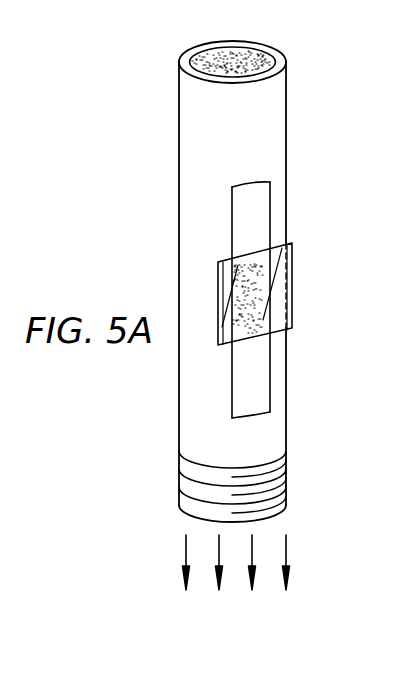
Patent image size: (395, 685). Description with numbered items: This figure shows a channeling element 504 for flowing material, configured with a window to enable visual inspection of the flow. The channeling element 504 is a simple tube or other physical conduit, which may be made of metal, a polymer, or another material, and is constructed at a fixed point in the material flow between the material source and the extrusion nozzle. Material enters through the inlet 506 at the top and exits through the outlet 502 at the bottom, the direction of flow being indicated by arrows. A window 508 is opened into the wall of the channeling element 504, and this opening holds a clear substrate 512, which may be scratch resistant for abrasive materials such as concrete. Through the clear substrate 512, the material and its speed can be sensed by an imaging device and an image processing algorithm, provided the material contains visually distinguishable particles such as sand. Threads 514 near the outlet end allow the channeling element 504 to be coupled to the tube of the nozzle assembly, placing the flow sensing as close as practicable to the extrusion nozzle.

The outlet 502 is at (186, 543).
The channeling element 504 is at (285, 149).
The inlet 506 is at (261, 60).
The window 508 is at (265, 227).
The clear substrate 512 is at (252, 292).
The threads 514 is at (180, 483).